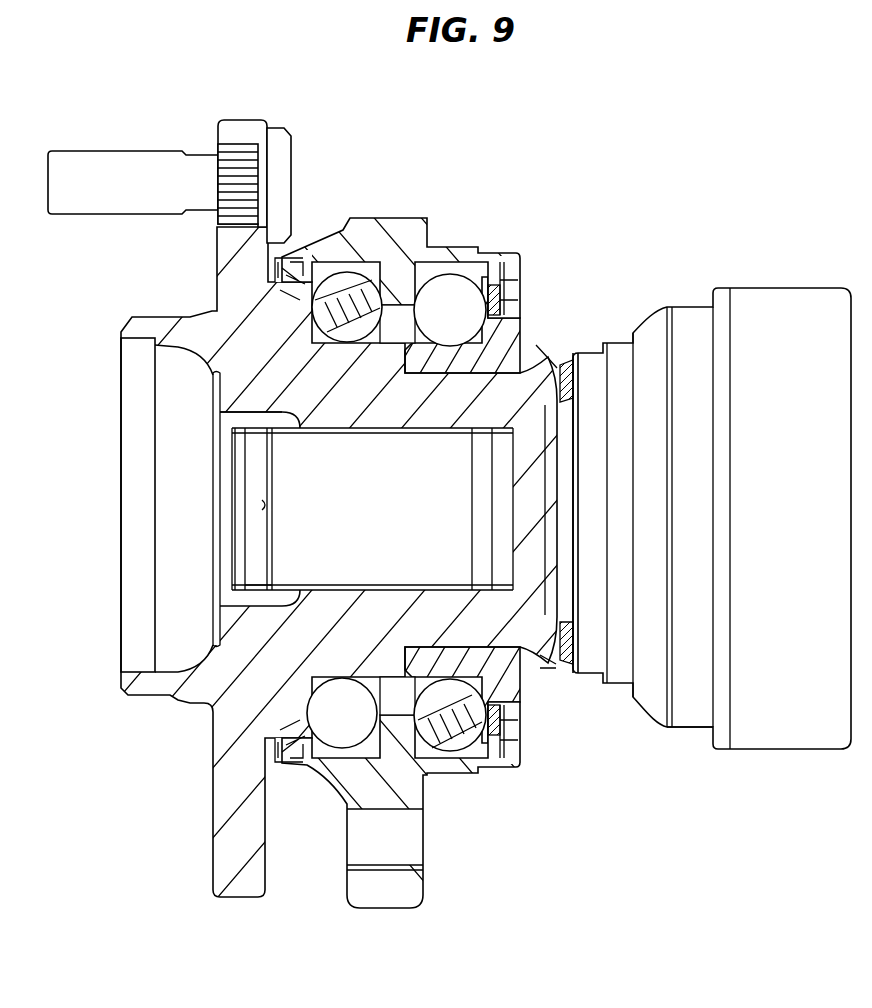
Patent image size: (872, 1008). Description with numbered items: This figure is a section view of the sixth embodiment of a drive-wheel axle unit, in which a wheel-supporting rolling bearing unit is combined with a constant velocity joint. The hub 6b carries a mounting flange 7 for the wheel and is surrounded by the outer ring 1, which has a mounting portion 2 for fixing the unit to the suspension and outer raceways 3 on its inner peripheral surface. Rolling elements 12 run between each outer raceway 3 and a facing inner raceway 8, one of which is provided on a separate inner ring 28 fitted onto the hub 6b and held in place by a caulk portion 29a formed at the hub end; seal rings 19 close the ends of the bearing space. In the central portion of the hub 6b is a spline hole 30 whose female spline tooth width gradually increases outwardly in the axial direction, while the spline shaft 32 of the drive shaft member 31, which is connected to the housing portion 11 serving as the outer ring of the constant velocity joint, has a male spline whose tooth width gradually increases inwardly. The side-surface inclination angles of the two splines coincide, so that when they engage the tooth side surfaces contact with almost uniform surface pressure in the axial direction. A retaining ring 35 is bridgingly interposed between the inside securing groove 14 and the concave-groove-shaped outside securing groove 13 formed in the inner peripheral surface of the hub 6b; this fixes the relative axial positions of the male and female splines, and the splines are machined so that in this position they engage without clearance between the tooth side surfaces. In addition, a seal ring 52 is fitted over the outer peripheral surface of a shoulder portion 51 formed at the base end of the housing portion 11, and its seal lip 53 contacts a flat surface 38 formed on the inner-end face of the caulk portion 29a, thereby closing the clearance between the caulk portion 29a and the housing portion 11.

The outer ring 1 is at (381, 208).
The mounting portion 2 is at (415, 889).
The outer raceway 3 is at (397, 220).
The hub 6b is at (165, 330).
The mounting flange 7 is at (247, 130).
The inner raceway 8 is at (335, 290).
The housing portion 11 is at (690, 305).
The rolling element 12 is at (347, 288).
The outside securing groove 13 is at (253, 572).
The inside securing groove 14 is at (265, 507).
The seal ring 19 is at (283, 280).
The inner ring 28 is at (515, 290).
The caulk portion 29a is at (548, 365).
The spline hole 30 is at (308, 437).
The drive shaft member 31 is at (690, 735).
The spline shaft 32 is at (312, 560).
The retaining ring 35 is at (225, 418).
The flat surface 38 is at (553, 660).
The shoulder portion 51 is at (568, 668).
The seal ring 52 is at (576, 358).
The seal lip 53 is at (566, 372).